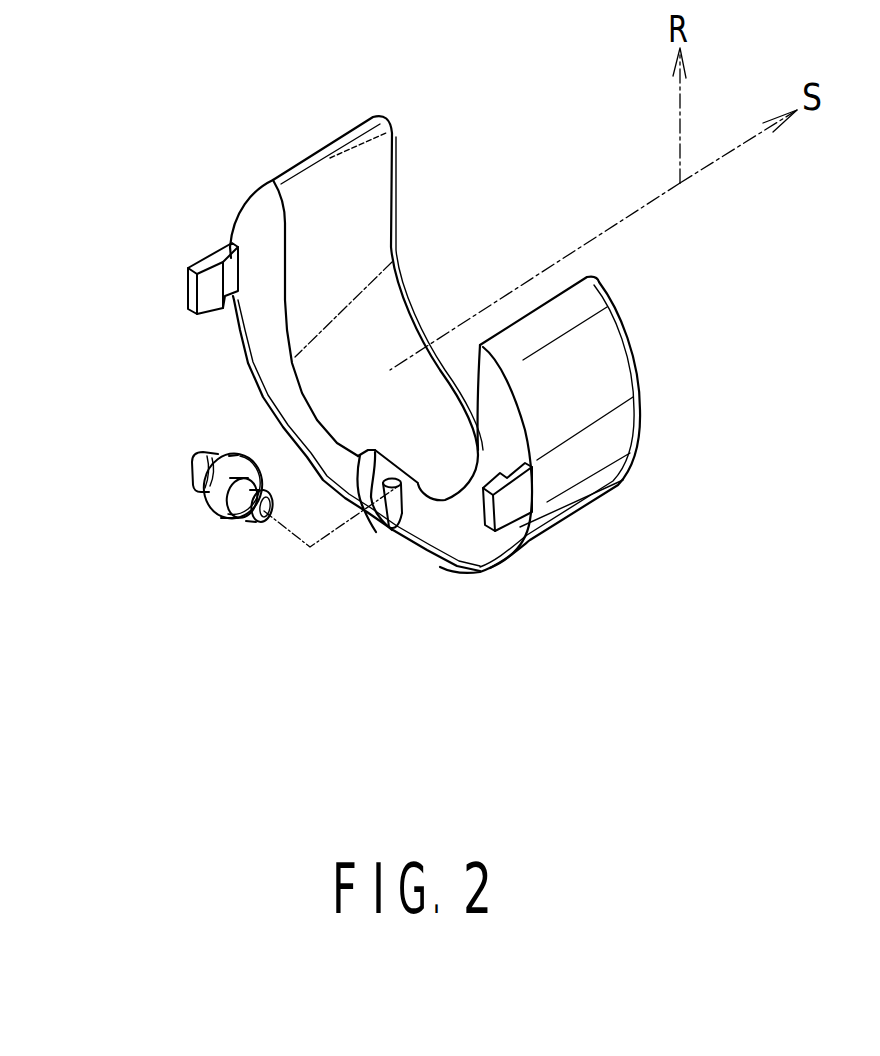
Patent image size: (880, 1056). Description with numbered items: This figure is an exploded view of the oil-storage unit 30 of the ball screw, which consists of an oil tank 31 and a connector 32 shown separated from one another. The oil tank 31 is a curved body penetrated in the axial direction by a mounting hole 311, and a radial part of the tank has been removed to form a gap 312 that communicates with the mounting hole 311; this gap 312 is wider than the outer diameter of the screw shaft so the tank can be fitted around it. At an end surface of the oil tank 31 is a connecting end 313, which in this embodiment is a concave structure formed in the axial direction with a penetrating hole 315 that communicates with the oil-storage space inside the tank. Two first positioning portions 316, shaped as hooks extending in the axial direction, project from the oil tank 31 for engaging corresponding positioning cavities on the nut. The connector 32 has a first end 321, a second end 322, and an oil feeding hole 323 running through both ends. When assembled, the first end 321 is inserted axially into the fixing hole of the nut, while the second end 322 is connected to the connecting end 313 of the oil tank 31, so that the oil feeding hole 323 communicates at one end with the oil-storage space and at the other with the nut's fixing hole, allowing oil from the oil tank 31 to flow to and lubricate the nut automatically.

The oil-storage unit 30 is at (285, 605).
The oil tank 31 is at (660, 405).
The mounting hole 311 is at (397, 333).
The gap 312 is at (432, 210).
The connecting end 313 is at (395, 500).
The penetrating hole 315 is at (392, 490).
The first positioning portions 316 is at (193, 297).
The connector 32 is at (213, 537).
The first end 321 is at (207, 463).
The second end 322 is at (247, 510).
The oil feeding hole 323 is at (267, 513).